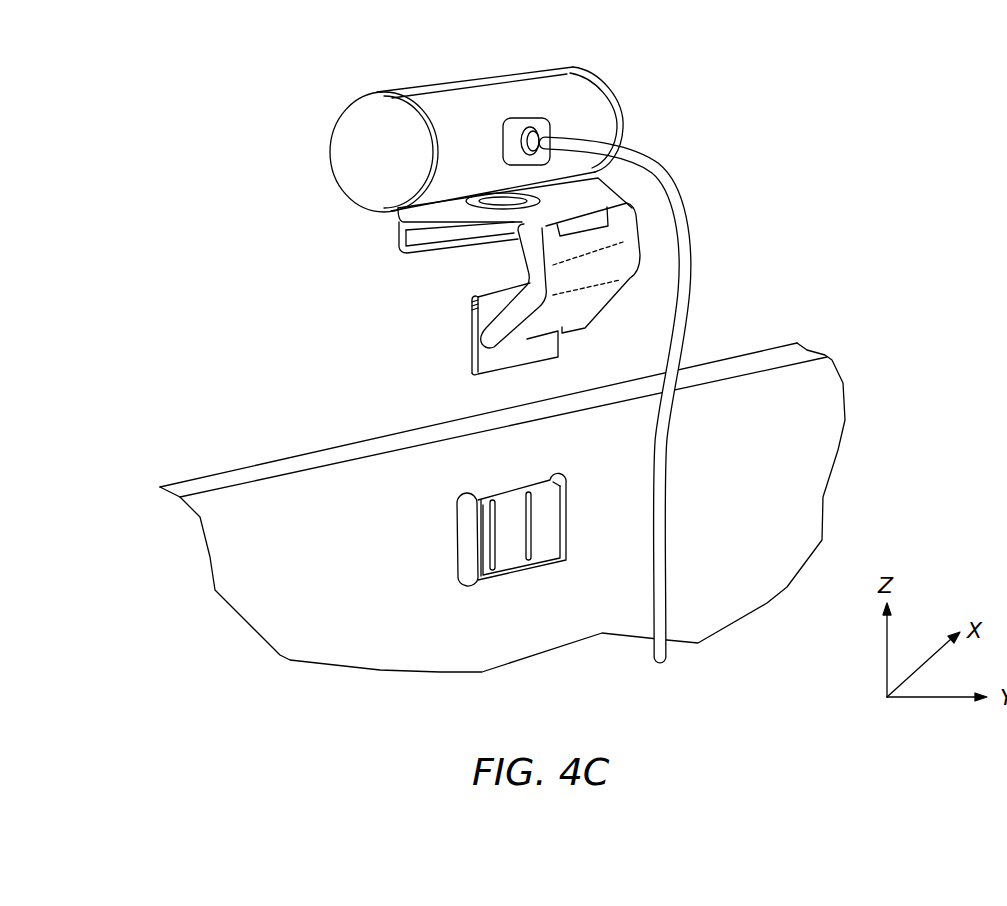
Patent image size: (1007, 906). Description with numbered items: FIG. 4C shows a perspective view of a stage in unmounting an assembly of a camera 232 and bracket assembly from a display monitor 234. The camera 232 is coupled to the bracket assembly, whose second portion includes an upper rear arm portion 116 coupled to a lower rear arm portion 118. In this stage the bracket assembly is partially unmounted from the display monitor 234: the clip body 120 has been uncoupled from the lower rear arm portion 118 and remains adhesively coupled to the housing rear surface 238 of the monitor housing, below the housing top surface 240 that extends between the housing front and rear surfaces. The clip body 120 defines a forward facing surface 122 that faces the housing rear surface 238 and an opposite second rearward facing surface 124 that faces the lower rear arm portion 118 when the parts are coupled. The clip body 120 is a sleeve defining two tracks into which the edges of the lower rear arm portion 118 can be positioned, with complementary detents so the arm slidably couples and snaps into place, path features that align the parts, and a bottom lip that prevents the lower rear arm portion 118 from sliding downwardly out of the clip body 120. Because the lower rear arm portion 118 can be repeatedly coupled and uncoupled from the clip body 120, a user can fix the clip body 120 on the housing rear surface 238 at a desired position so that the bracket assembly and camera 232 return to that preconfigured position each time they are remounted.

The upper rear arm portion 116 is at (605, 238).
The lower rear arm portion 118 is at (472, 323).
The clip body 120 is at (567, 545).
The forward facing surface 122 is at (458, 543).
The second rearward facing surface 124 is at (585, 522).
The camera 232 is at (468, 102).
The display monitor 234 is at (833, 218).
The housing rear surface 238 is at (790, 478).
The housing top surface 240 is at (760, 350).